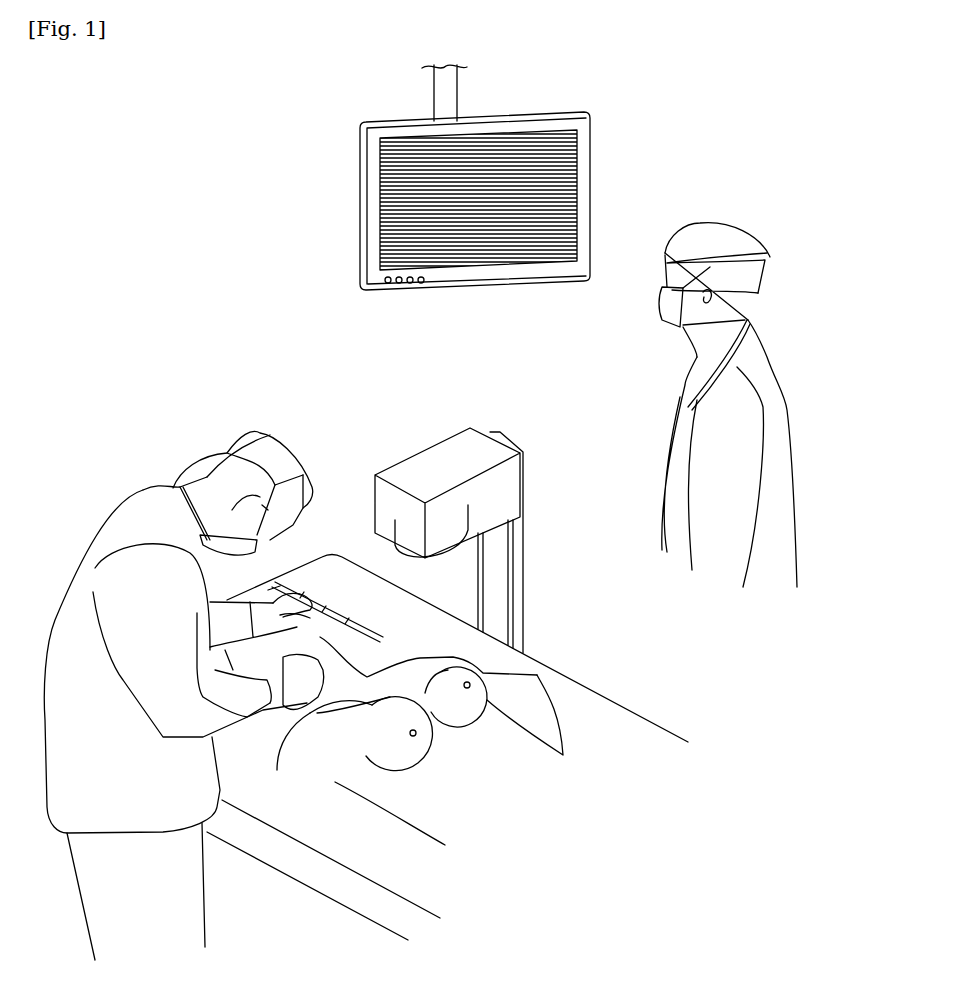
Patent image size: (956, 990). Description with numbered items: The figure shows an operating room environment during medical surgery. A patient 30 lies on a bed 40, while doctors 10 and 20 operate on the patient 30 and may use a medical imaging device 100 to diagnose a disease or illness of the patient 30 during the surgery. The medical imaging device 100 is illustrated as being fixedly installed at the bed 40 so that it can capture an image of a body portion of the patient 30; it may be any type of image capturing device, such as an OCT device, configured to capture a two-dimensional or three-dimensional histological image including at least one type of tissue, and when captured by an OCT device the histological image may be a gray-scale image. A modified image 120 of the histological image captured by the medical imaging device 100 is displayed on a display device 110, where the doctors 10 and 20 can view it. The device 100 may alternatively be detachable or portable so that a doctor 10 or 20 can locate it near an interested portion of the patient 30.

The doctor 10 is at (130, 502).
The doctor 20 is at (763, 353).
The patient 30 is at (530, 737).
The bed 40 is at (637, 723).
The medical imaging device 100 is at (422, 452).
The display device 110 is at (360, 162).
The modified image 120 is at (378, 214).